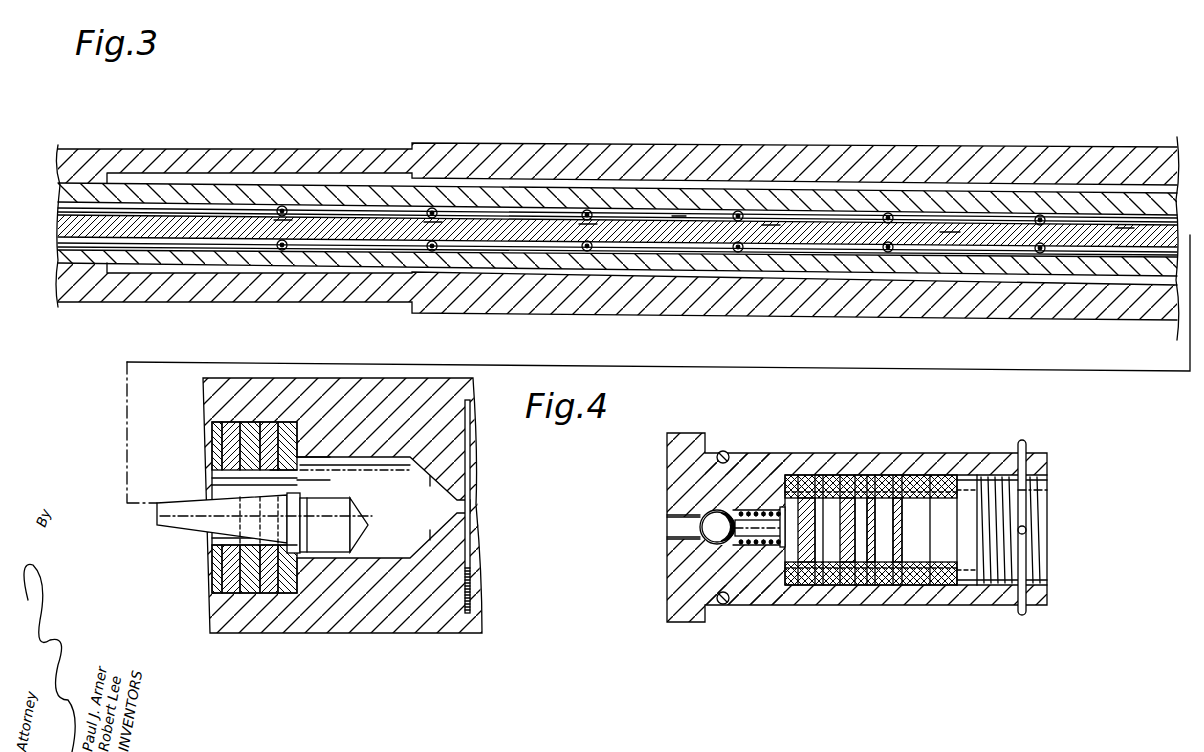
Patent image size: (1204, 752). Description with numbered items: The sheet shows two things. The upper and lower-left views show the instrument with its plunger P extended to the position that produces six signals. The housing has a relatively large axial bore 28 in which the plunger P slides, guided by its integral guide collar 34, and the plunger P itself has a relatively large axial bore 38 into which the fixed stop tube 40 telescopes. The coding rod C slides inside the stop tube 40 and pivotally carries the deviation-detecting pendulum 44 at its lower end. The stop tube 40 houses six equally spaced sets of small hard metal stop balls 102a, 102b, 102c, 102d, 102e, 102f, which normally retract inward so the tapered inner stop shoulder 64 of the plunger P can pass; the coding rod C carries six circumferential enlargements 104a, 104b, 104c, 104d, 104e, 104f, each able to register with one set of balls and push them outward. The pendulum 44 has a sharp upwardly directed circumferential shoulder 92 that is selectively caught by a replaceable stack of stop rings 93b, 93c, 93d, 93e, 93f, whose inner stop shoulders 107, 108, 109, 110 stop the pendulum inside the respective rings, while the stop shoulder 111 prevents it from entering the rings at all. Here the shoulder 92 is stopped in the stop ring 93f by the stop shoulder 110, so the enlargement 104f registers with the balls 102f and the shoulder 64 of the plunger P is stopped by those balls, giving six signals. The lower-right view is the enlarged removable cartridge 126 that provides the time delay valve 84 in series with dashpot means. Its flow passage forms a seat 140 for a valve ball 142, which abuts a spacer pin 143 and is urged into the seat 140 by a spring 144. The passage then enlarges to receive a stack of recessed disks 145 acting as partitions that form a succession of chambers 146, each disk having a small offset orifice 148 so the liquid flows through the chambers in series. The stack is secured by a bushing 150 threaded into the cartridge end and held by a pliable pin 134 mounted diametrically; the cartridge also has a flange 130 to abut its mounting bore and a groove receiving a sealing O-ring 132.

In FIG. 3, the axial bore 28 is at (516, 182).
In FIG. 3, the guide collar 34 is at (651, 268).
In FIG. 3, the axial bore 38 is at (379, 248).
In FIG. 3, the stop tube 40 is at (477, 231).
In FIG. 3, the tapered stop shoulder 64 is at (283, 251).
In FIG. 3, the plunger P is at (498, 300).
In FIG. 3, the coding rod C is at (679, 210).
In FIG. 3, the stop balls 102a is at (1041, 214).
In FIG. 3, the stop balls 102b is at (889, 213).
In FIG. 3, the stop balls 102c is at (739, 213).
In FIG. 3, the stop balls 102d is at (588, 212).
In FIG. 3, the stop balls 102e is at (434, 209).
In FIG. 3, the stop balls 102f is at (285, 206).
In FIG. 3, the circumferential enlargement 104a is at (1125, 220).
In FIG. 3, the circumferential enlargement 104b is at (950, 230).
In FIG. 3, the circumferential enlargement 104c is at (770, 218).
In FIG. 3, the circumferential enlargement 104d is at (616, 213).
In FIG. 3, the circumferential enlargement 104e is at (450, 213).
In FIG. 3, the circumferential enlargement 104f is at (284, 240).
In FIG. 3, the stop ring 93b is at (216, 421).
In FIG. 3, the stop ring 93c is at (233, 421).
In FIG. 3, the stop ring 93d is at (263, 421).
In FIG. 3, the stop ring 93e is at (270, 421).
In FIG. 3, the stop ring 93f is at (290, 421).
In FIG. 3, the stop shoulder 107 is at (212, 488).
In FIG. 3, the stop shoulder 108 is at (212, 478).
In FIG. 3, the stop shoulder 109 is at (280, 466).
In FIG. 3, the stop shoulder 110 is at (300, 458).
In FIG. 3, the stop shoulder 111 is at (298, 480).
In FIG. 3, the pendulum 44 is at (332, 533).
In FIG. 3, the circumferential shoulder 92 is at (268, 548).
In FIG. 4, the time delay valve 84 is at (724, 500).
In FIG. 4, the cartridge 126 is at (912, 428).
In FIG. 4, the flange 130 is at (708, 620).
In FIG. 4, the sealing O-ring 132 is at (723, 606).
In FIG. 4, the pliable pin 134 is at (1026, 450).
In FIG. 4, the seat 140 is at (700, 545).
In FIG. 4, the valve ball 142 is at (702, 527).
In FIG. 4, the spacer pin 143 is at (747, 527).
In FIG. 4, the spring 144 is at (765, 538).
In FIG. 4, the recessed disks 145 is at (835, 582).
In FIG. 4, the chambers 146 is at (858, 490).
In FIG. 4, the orifice 148 is at (783, 477).
In FIG. 4, the bushing 150 is at (1040, 476).